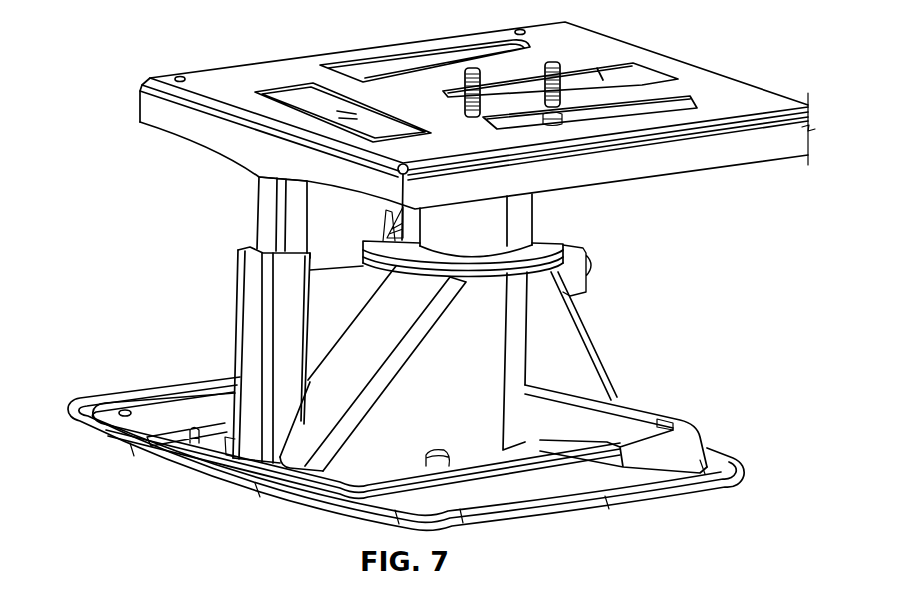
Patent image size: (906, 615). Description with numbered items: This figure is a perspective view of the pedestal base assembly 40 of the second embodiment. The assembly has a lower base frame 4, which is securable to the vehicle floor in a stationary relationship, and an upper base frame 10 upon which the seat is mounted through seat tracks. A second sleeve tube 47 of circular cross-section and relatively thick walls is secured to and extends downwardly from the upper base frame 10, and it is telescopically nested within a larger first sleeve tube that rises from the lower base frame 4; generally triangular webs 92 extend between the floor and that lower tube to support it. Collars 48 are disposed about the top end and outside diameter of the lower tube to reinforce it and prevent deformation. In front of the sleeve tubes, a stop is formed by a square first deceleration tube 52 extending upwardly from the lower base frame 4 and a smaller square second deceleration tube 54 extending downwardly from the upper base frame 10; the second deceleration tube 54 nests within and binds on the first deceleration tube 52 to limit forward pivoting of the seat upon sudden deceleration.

The upper base frame 10 is at (616, 48).
The pedestal base assembly 40 is at (199, 45).
The lower base frame 4 is at (465, 435).
The first deceleration tube 52 is at (234, 300).
The second deceleration tube 54 is at (268, 210).
The second sleeve tube 47 is at (515, 210).
The collar 48 is at (426, 282).
The triangular web 92 is at (571, 342).